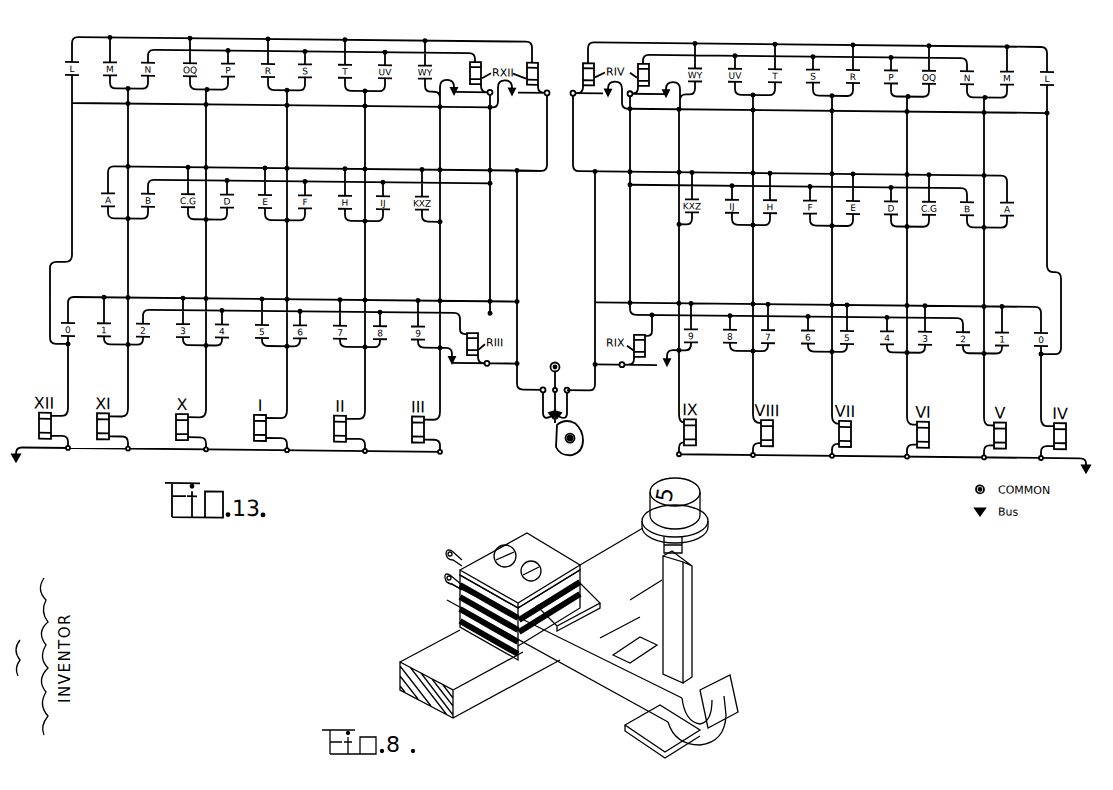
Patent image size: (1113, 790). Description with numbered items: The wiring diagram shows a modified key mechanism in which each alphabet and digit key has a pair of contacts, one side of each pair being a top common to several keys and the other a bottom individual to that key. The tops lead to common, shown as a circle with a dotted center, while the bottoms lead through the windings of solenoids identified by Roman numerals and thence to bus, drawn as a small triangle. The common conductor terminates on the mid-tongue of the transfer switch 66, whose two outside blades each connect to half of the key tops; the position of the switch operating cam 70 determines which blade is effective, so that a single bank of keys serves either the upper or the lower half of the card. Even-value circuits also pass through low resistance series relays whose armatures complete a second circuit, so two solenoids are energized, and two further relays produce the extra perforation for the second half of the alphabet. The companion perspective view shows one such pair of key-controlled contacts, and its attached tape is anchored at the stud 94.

In FIG. 13, the transfer switch 66 is at (539, 416).
In FIG. 13, the switch operating cam 70 is at (571, 451).
In FIG. 8, the stud 94 is at (490, 688).